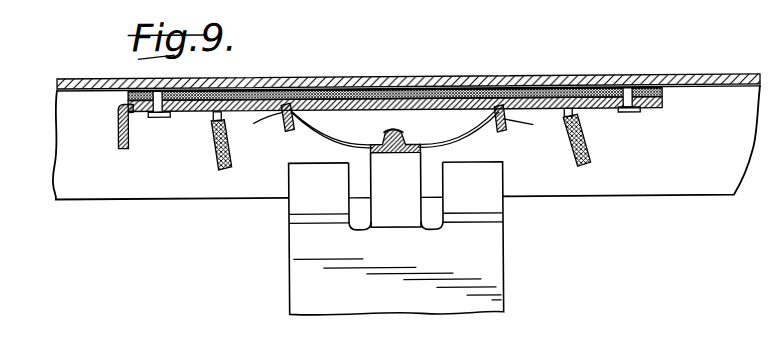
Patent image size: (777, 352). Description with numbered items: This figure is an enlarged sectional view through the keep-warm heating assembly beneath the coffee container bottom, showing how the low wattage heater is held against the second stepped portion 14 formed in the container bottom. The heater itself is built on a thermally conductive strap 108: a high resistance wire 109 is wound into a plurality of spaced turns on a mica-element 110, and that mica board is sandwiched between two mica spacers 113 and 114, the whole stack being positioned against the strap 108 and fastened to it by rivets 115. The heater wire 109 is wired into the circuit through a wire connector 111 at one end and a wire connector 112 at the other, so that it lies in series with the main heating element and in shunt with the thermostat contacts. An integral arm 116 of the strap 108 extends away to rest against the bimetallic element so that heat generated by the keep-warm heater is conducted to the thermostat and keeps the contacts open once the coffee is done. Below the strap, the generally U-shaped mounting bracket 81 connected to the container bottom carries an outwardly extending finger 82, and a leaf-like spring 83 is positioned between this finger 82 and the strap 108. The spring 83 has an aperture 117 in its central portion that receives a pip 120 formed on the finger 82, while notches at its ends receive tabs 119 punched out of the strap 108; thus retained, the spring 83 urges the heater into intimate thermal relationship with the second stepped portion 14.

The second stepped portion 14 is at (426, 78).
The mounting bracket 81 is at (487, 259).
The finger 82 is at (414, 192).
The spring 83 is at (327, 139).
The thermally conductive strap 108 is at (187, 114).
The high resistance wire 109 is at (598, 116).
The mica-element 110 is at (667, 97).
The wire connector 111 is at (213, 154).
The wire connector 112 is at (572, 157).
The mica spacer 113 is at (666, 105).
The mica spacer 114 is at (666, 96).
The rivet 115 is at (635, 116).
The integral arm 116 is at (125, 147).
The aperture 117 is at (388, 134).
The tab 119 is at (281, 115).
The pip 120 is at (400, 135).